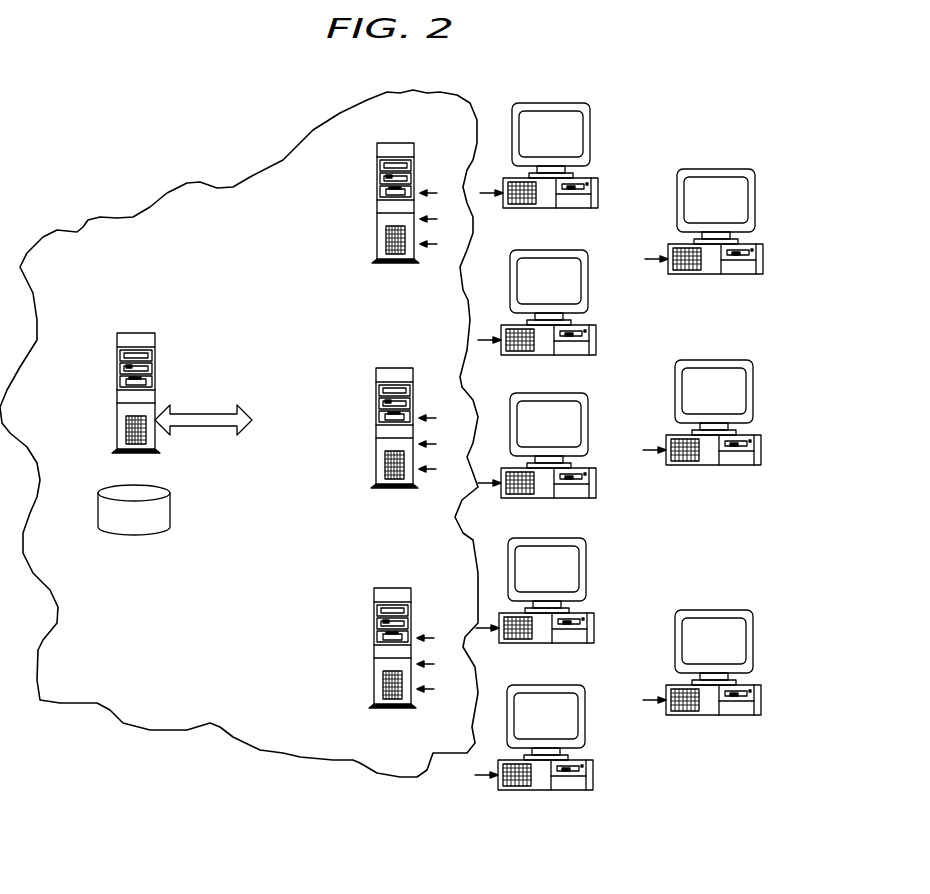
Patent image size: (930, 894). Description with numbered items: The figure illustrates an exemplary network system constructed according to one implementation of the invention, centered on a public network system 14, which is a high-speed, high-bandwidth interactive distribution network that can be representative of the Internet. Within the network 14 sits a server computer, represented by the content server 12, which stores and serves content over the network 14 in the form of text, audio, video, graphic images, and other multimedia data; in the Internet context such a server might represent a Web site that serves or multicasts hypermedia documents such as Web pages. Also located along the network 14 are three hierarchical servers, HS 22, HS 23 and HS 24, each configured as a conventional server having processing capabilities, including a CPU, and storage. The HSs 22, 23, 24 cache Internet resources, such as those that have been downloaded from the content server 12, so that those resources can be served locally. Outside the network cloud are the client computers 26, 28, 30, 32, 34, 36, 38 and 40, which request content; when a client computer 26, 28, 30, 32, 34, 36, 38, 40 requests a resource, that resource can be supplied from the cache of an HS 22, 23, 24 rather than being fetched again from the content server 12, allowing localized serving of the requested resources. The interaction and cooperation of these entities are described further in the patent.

The content server 12 is at (90, 393).
The public network system 14 is at (156, 152).
The HS 22 is at (393, 588).
The HS 23 is at (395, 368).
The HS 24 is at (396, 143).
The client computer 26 is at (592, 762).
The client computer 28 is at (593, 617).
The client computer 30 is at (594, 472).
The client computer 32 is at (594, 325).
The client computer 34 is at (595, 178).
The client computer 36 is at (761, 688).
The client computer 38 is at (761, 438).
The client computer 40 is at (762, 247).